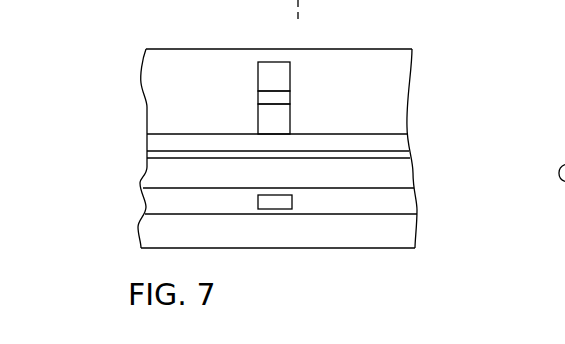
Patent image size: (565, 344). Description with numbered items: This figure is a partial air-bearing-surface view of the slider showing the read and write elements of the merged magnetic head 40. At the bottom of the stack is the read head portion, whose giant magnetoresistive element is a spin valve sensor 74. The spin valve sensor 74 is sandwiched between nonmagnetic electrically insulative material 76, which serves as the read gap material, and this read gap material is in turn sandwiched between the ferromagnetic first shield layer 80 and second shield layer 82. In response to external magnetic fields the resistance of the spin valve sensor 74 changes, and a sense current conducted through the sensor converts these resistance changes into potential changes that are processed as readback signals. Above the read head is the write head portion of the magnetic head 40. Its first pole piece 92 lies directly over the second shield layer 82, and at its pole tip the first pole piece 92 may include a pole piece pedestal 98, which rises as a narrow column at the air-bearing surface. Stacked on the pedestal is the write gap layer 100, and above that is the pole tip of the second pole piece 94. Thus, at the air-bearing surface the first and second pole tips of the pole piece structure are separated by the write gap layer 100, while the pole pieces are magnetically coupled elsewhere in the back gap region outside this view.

The magnetic head 40 is at (436, 50).
The spin valve sensor 74 is at (276, 203).
The nonmagnetic electrically insulative material 76 is at (360, 202).
The first shield layer 80 is at (402, 231).
The second shield layer 82 is at (402, 177).
The first pole piece 92 is at (160, 143).
The second pole piece 94 is at (284, 73).
The pole piece pedestal 98 is at (282, 118).
The write gap layer 100 is at (290, 97).